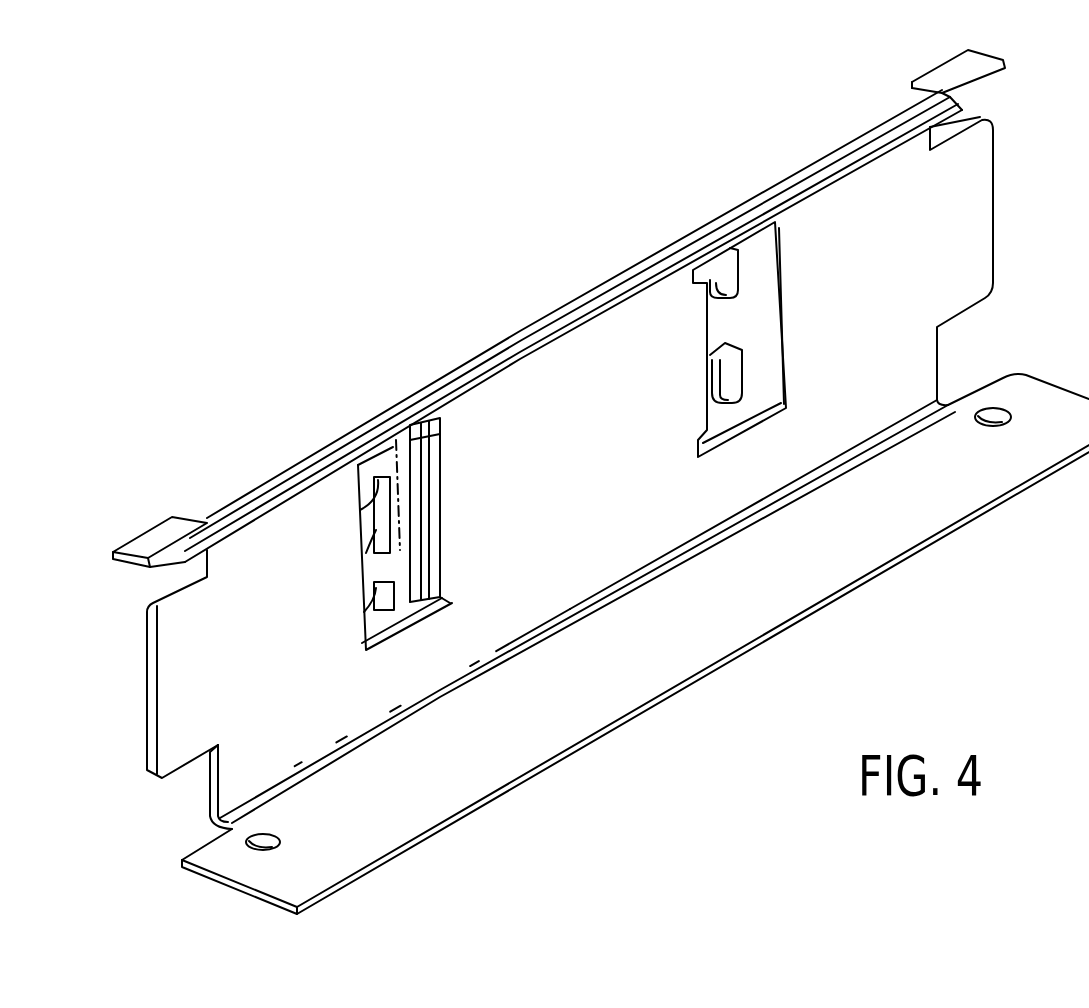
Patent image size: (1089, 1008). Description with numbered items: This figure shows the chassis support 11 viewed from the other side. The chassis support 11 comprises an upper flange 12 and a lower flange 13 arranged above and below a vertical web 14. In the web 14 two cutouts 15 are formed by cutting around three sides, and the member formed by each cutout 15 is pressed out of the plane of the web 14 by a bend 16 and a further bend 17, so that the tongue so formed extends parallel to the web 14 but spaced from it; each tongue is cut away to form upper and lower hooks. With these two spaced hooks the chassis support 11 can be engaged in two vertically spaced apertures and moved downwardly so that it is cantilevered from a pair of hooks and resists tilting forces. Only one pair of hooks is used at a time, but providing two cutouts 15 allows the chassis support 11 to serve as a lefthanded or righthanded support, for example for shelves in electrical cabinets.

The chassis support 11 is at (593, 352).
The upper flange 12 is at (943, 82).
The lower flange 13 is at (962, 485).
The vertical web 14 is at (973, 222).
The cutout 15 is at (757, 288).
The bend 16 is at (437, 553).
The further bend 17 is at (400, 457).